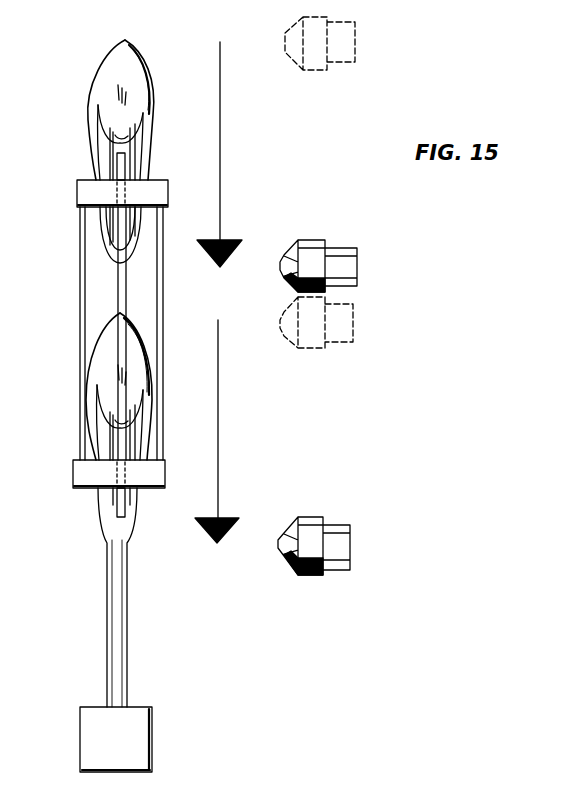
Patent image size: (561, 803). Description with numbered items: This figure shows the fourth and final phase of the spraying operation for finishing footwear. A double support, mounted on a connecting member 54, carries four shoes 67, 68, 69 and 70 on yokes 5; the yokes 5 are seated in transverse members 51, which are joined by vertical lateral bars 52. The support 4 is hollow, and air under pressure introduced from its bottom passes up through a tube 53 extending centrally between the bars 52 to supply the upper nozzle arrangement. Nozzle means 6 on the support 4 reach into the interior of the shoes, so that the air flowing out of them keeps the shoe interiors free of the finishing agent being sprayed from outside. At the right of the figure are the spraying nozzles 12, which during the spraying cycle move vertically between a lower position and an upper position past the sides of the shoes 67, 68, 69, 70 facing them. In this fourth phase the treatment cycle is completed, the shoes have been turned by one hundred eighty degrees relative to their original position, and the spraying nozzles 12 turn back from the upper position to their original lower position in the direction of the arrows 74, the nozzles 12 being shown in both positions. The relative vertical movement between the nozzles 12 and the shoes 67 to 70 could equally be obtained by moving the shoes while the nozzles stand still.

The support 4 is at (110, 590).
The yoke 5 is at (135, 136).
The nozzle means 6 is at (126, 162).
The spraying nozzle 12 is at (358, 50).
The transverse member 51 is at (88, 195).
The vertical lateral bar 52 is at (84, 278).
The tube 53 is at (126, 300).
The connecting member 54 is at (90, 740).
The shoe 67 is at (100, 90).
The shoe 68 is at (100, 353).
The shoe 69 is at (108, 70).
The shoe 70 is at (93, 377).
The arrow 74 is at (222, 152).